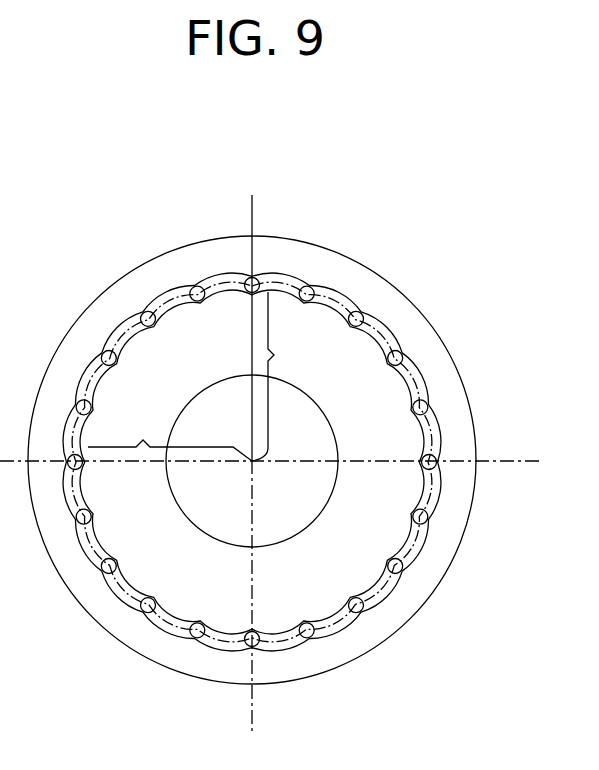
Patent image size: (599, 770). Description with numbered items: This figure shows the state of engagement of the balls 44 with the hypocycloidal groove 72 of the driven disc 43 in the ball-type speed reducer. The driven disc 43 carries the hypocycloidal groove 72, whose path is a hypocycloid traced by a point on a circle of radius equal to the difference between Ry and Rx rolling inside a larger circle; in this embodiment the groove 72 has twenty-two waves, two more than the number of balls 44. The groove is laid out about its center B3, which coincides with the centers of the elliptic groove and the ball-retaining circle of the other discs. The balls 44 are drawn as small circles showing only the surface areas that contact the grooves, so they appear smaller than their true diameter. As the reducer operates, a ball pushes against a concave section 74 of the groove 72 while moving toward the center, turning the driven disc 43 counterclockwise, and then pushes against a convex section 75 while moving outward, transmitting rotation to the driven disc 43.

The driven disc 43 is at (373, 268).
The balls 44 is at (426, 519).
The hypocycloidal groove 72 is at (281, 289).
The concave section 74 is at (362, 337).
The convex section 75 is at (415, 374).
The center of the groove B3 is at (252, 461).
The radius Rx is at (170, 436).
The radius Ry is at (281, 376).